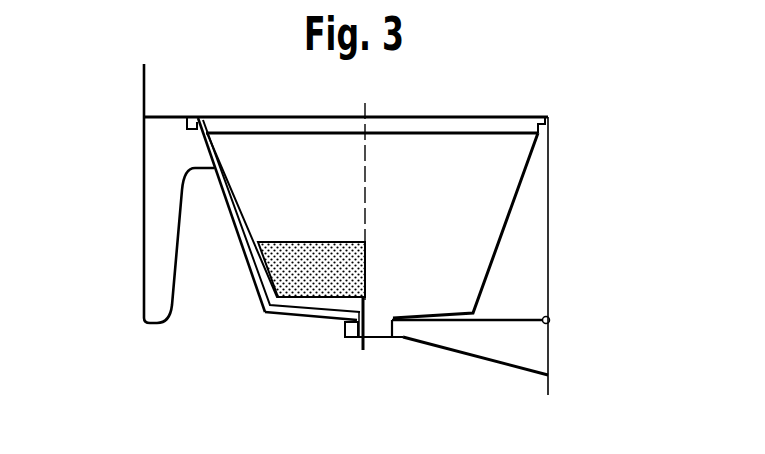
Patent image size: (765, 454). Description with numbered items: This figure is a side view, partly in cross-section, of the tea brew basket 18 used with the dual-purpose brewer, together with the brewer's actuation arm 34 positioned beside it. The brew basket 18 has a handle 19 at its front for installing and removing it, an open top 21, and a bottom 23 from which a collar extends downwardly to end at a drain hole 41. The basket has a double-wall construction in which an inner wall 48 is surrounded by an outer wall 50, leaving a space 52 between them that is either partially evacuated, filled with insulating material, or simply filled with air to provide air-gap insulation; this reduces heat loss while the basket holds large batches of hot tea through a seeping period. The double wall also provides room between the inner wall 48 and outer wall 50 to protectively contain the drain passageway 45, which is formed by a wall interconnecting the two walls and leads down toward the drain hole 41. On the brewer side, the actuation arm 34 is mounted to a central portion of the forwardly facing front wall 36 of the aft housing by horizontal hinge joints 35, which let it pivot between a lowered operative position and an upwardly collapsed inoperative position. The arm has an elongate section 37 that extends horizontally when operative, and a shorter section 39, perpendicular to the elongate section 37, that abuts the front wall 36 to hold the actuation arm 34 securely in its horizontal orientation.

The tea brew basket 18 is at (508, 164).
The handle 19 is at (152, 268).
The open top 21 is at (340, 117).
The bottom 23 is at (323, 317).
The actuation arm 34 is at (515, 352).
The horizontal hinge joints 35 is at (550, 320).
The front wall 36 is at (551, 219).
The elongate section 37 is at (502, 318).
The shorter section 39 is at (550, 360).
The drain hole 41 is at (348, 338).
The drain passageway 45 is at (458, 355).
The inner wall 48 is at (303, 290).
The outer wall 50 is at (258, 305).
The space 52 is at (312, 308).